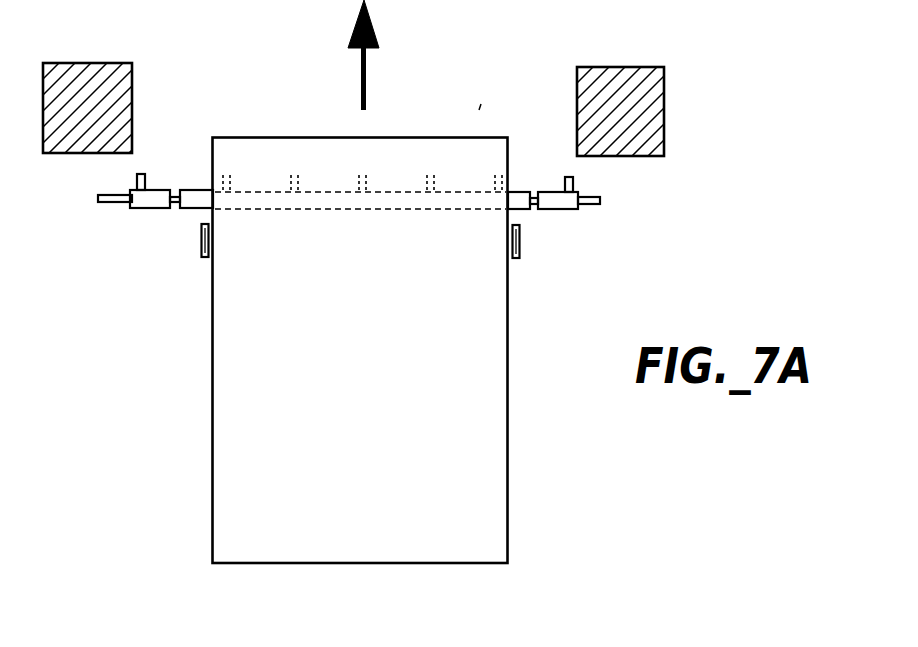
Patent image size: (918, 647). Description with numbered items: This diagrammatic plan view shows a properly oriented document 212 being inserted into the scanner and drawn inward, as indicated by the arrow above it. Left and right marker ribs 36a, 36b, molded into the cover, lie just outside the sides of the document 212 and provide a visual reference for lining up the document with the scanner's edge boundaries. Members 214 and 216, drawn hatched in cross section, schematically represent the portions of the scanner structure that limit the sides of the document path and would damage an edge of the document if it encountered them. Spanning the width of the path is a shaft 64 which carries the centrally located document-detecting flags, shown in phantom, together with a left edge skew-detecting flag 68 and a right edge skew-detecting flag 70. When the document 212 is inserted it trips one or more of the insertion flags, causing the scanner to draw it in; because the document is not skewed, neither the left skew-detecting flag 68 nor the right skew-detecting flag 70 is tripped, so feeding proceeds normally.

The document 212 is at (508, 477).
The member 214 is at (87, 62).
The member 216 is at (615, 67).
The left edge skew-detecting flag 68 is at (140, 173).
The right edge skew-detecting flag 70 is at (567, 177).
The shaft 64 is at (590, 207).
The left marker rib 36a is at (199, 243).
The right marker rib 36b is at (521, 245).